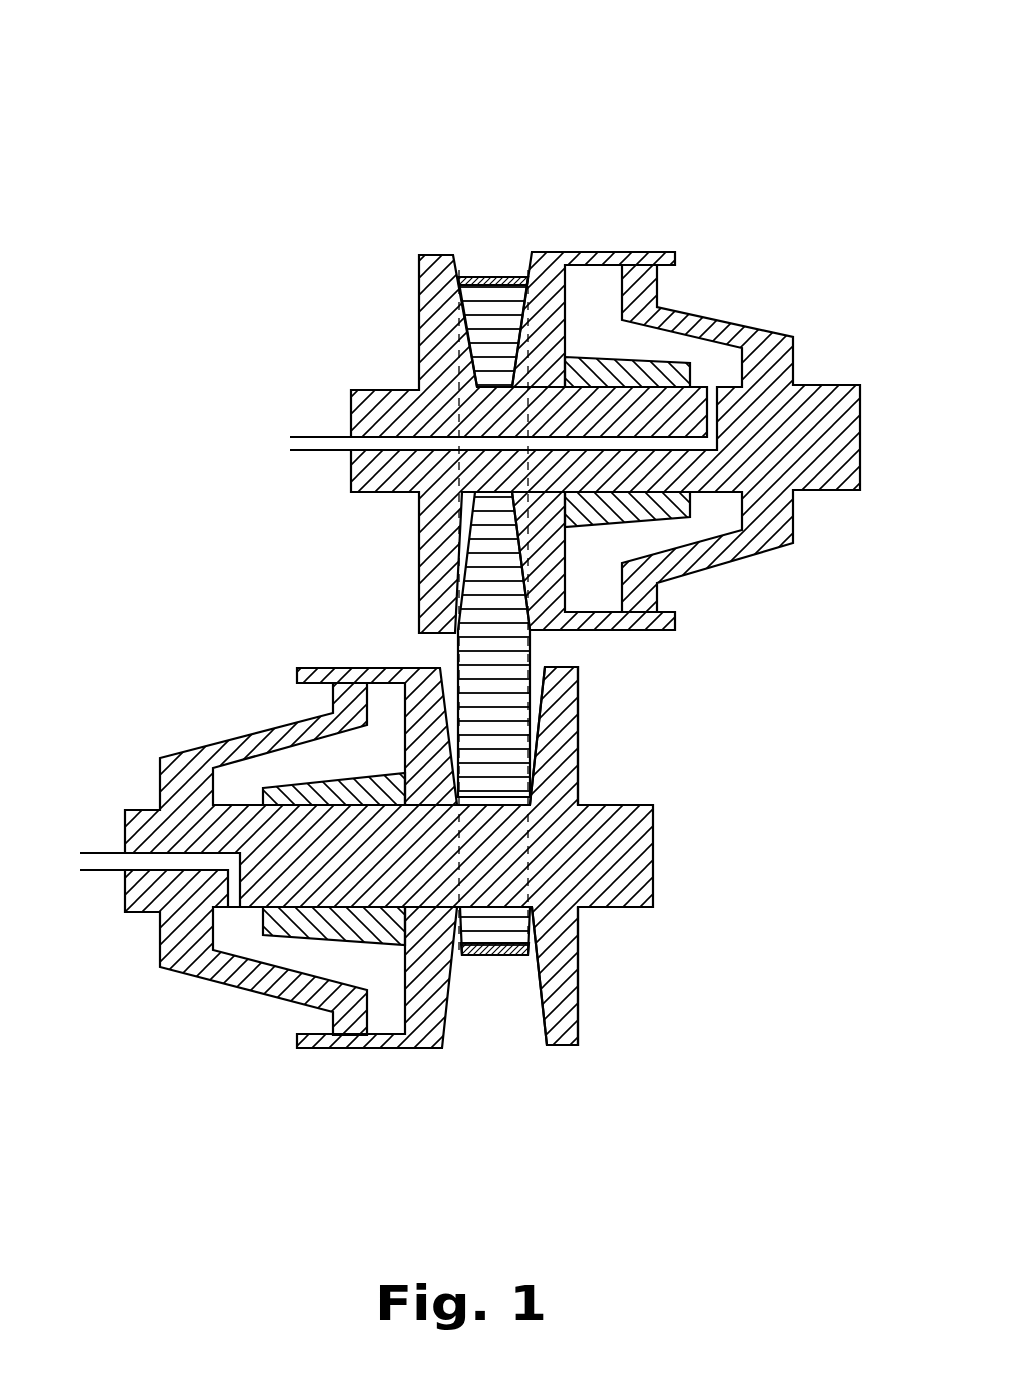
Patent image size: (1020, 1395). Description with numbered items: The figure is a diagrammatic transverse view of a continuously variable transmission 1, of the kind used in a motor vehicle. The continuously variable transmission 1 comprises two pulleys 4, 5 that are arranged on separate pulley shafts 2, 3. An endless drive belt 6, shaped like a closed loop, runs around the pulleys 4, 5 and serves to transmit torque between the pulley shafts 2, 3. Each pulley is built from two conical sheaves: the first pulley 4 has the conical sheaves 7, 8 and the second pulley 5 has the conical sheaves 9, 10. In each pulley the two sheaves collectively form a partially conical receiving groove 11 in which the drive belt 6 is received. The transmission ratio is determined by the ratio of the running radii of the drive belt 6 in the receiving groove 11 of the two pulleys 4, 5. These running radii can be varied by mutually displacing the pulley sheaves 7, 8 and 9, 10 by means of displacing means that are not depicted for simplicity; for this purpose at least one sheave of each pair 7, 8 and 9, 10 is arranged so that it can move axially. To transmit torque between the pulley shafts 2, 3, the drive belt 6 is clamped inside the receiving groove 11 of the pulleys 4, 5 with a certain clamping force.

The continuously variable transmission 1 is at (600, 137).
The pulley shaft 2 is at (835, 413).
The pulley shaft 3 is at (622, 845).
The pulley 4 is at (378, 312).
The pulley 5 is at (597, 981).
The drive belt 6 is at (498, 320).
The conical sheave 7 is at (420, 256).
The conical sheave 8 is at (541, 290).
The conical sheave 9 is at (430, 1017).
The conical sheave 10 is at (572, 1020).
The receiving groove 11 is at (495, 987).